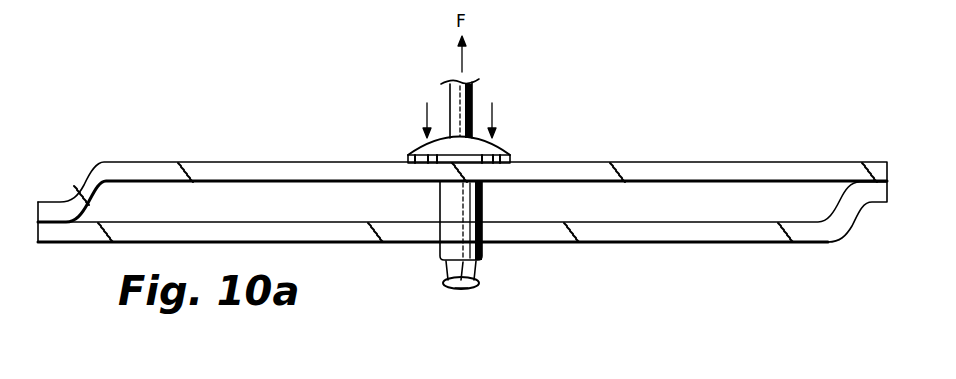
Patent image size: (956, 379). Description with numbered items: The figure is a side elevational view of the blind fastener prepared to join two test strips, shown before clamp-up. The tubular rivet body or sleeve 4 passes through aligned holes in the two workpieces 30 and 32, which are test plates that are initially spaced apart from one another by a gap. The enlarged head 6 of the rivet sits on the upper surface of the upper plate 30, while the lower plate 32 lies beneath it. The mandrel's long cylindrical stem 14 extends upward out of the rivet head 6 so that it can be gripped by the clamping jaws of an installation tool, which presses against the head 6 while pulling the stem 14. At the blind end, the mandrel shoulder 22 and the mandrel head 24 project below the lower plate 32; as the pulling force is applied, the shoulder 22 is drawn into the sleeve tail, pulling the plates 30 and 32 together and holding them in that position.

The tubular rivet body or sleeve 4 is at (482, 193).
The enlarged head 6 is at (493, 148).
The stem 14 is at (450, 94).
The shoulder 22 is at (473, 268).
The head 24 is at (468, 292).
The workpiece 30 is at (688, 168).
The workpiece 32 is at (692, 232).